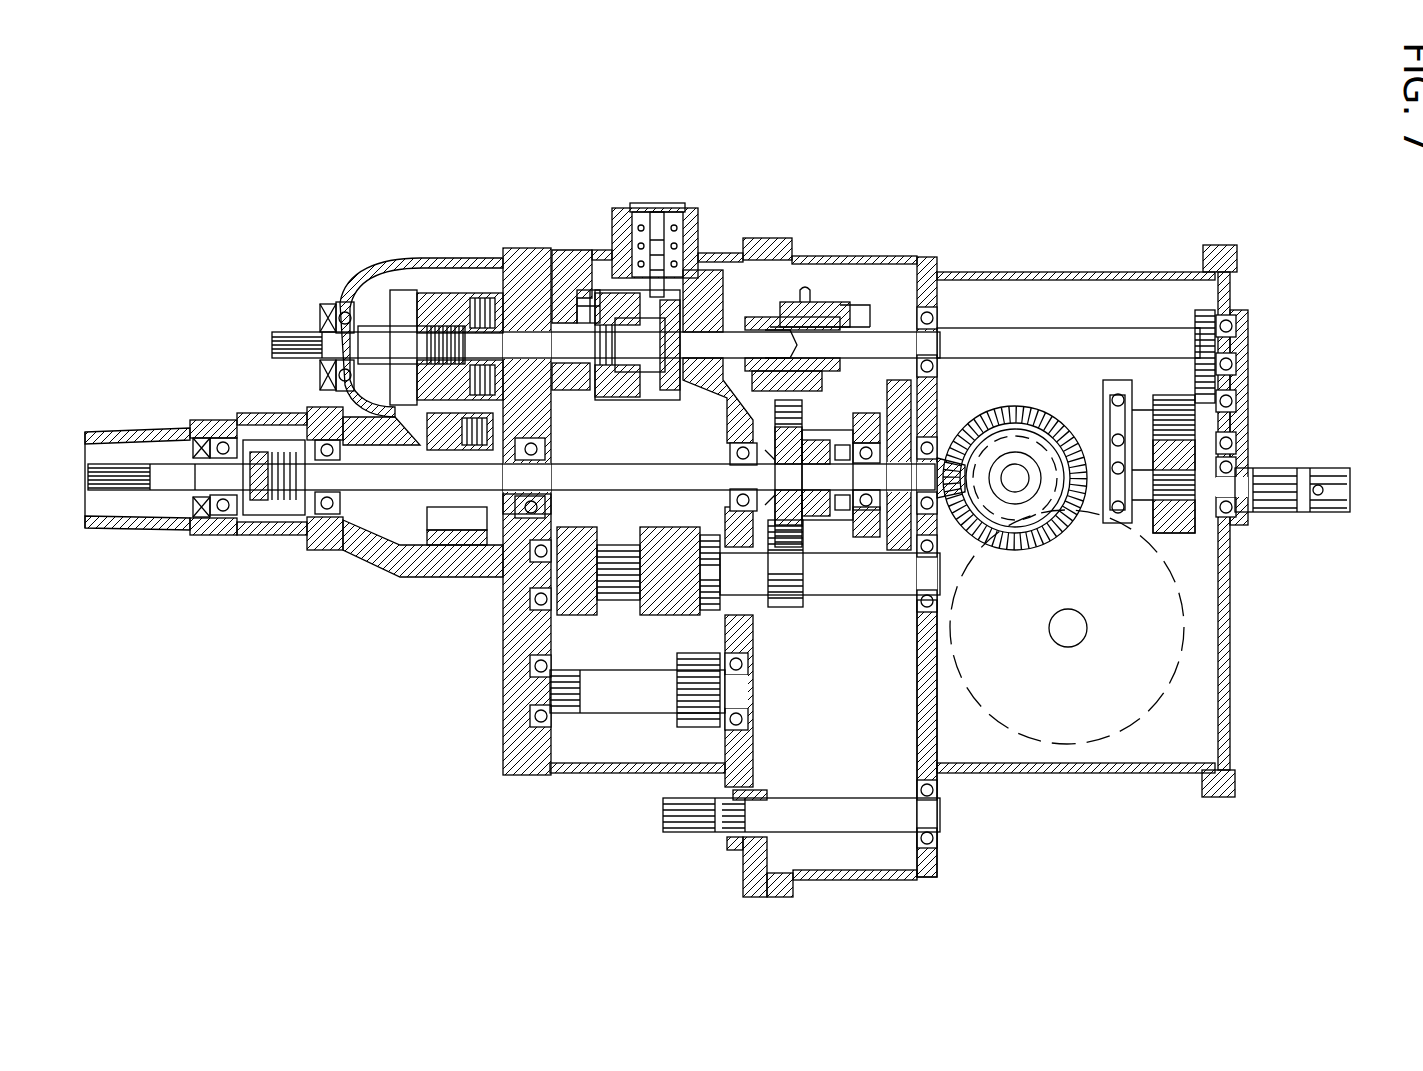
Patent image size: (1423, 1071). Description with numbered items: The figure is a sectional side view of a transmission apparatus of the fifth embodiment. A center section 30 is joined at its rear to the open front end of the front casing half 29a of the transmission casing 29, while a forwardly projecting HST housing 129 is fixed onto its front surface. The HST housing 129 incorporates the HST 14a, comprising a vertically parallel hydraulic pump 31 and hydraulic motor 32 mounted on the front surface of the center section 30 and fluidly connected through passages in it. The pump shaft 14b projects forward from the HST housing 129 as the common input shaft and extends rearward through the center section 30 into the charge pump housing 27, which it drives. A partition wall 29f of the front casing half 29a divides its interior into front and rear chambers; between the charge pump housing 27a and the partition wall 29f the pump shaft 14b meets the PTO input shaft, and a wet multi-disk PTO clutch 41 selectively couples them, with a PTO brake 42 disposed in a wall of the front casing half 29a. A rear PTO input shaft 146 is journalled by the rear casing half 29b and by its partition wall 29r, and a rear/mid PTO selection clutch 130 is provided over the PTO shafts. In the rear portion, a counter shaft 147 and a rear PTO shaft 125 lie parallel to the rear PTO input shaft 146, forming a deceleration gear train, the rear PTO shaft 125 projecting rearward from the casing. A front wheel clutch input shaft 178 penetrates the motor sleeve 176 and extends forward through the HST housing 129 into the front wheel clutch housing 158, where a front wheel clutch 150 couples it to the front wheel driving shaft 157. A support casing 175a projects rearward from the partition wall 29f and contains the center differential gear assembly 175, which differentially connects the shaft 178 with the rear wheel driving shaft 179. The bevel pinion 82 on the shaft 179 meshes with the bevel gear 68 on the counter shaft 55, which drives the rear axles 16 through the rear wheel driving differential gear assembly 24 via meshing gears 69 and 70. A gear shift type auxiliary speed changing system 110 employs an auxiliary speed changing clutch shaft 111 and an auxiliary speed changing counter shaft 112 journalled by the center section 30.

The HST 14a is at (437, 280).
The pump shaft 14b is at (289, 333).
The rear axles 16 is at (1077, 630).
The rear wheel driving differential gear assembly 24 is at (1190, 690).
The charge pump housing 27 is at (547, 293).
The charge pump housing 27a is at (576, 292).
The transmission casing 29 is at (1098, 800).
The front casing half 29a is at (757, 240).
The rear casing half 29b is at (926, 257).
The partition wall 29f is at (710, 388).
The partition wall 29r is at (913, 683).
The center section 30 is at (522, 250).
The hydraulic pump 31 is at (457, 290).
The hydraulic motor 32 is at (473, 563).
The PTO clutch 41 is at (640, 385).
The PTO brake 42 is at (673, 210).
The counter shaft 55 is at (1015, 480).
The bevel gear 68 is at (1048, 406).
The gear 69 is at (1053, 497).
The gear 70 is at (1183, 650).
The bevel pinion 82 is at (973, 540).
The auxiliary speed changing system 110 is at (655, 633).
The auxiliary speed changing clutch shaft 111 is at (818, 585).
The auxiliary speed changing counter shaft 112 is at (592, 703).
The rear PTO shaft 125 is at (1330, 465).
The HST housing 129 is at (373, 560).
The rear/mid PTO selection clutch 130 is at (814, 282).
The rear PTO input shaft 146 is at (1057, 340).
The counter shaft 147 is at (1225, 418).
The front wheel clutch 150 is at (263, 440).
The front wheel driving shaft 157 is at (138, 472).
The front wheel clutch housing 158 is at (200, 530).
The center differential gear assembly 175 is at (828, 547).
The support casing 175a is at (845, 430).
The motor sleeve 176 is at (527, 523).
The front wheel clutch input shaft 178 is at (633, 478).
The rear wheel driving shaft 179 is at (938, 423).